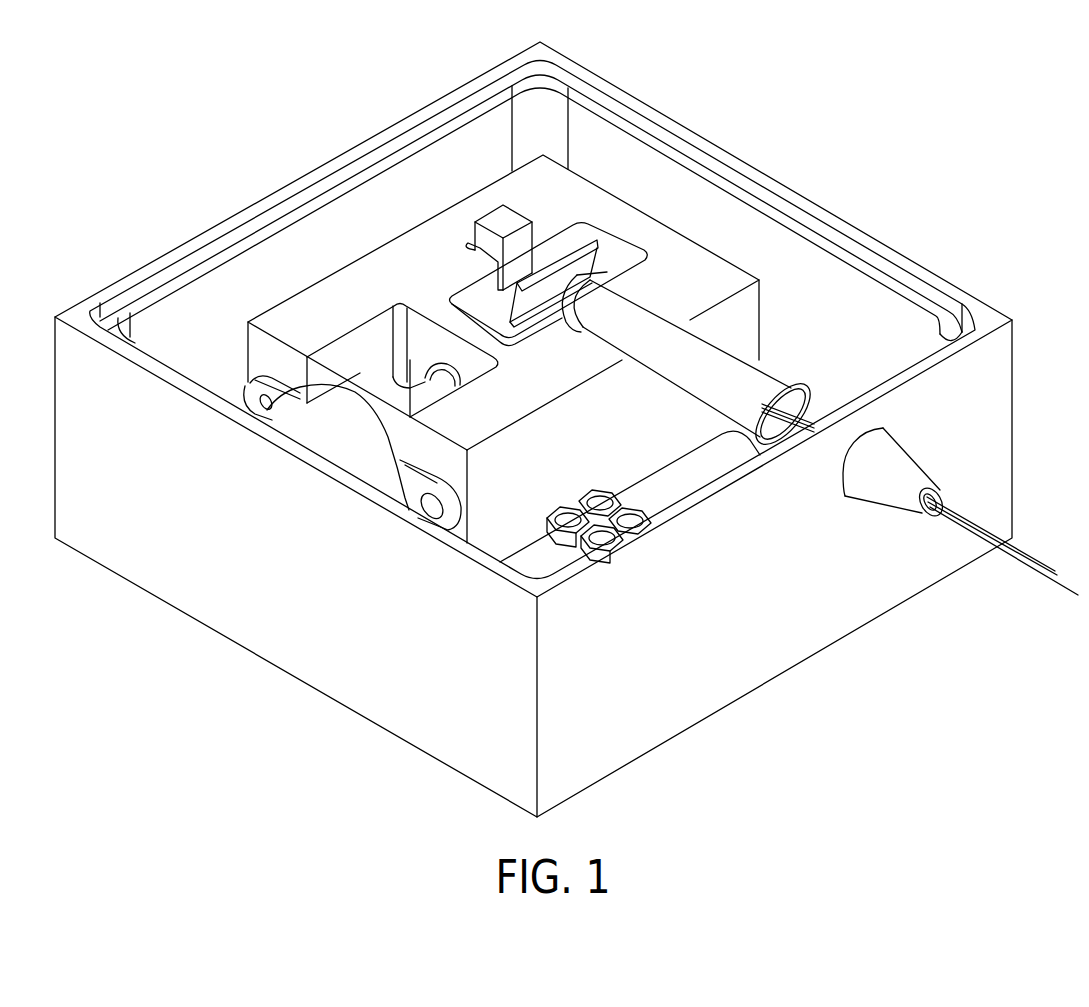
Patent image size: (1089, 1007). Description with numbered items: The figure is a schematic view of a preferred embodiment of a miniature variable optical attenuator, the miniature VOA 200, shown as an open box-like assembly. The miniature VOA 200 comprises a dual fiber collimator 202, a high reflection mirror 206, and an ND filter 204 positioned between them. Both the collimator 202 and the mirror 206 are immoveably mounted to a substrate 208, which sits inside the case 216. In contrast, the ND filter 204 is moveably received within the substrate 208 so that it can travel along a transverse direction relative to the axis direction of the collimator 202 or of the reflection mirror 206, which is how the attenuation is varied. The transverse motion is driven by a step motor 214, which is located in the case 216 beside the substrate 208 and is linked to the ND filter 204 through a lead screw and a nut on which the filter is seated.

The miniature VOA 200 is at (311, 809).
The dual fiber collimator 202 is at (777, 362).
The ND filter 204 is at (590, 248).
The high reflection mirror 206 is at (505, 228).
The substrate 208 is at (349, 300).
The step motor 214 is at (312, 440).
The case 216 is at (656, 655).